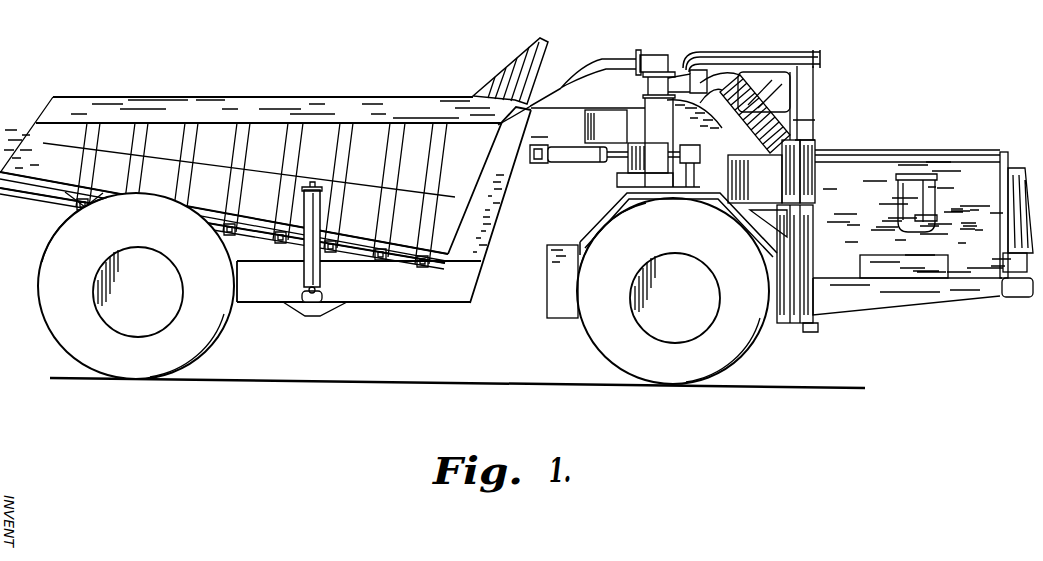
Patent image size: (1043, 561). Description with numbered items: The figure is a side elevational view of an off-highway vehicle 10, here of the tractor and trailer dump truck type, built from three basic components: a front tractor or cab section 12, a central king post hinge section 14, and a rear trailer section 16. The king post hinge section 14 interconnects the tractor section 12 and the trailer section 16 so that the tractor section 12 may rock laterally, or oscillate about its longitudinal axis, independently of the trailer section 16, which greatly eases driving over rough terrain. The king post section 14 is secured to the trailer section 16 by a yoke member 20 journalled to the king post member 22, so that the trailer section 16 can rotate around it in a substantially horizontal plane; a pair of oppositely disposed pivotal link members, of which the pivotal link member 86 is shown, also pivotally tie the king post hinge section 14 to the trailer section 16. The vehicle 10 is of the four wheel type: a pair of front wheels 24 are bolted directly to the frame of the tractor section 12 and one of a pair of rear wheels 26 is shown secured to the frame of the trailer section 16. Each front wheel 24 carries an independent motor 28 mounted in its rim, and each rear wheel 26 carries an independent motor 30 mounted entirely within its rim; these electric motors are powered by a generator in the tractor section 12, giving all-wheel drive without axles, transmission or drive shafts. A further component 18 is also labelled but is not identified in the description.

The off-highway vehicle 10 is at (415, 112).
The front tractor or cab section 12 is at (876, 165).
The king post hinge section 14 is at (665, 82).
The rear trailer section 16 is at (208, 107).
The top rail 18 is at (153, 102).
The yoke member 20 is at (638, 118).
The king post member 22 is at (660, 140).
The front wheels 24 is at (740, 352).
The rear wheels 26 is at (200, 347).
The motor 28 is at (696, 291).
The motor 30 is at (160, 286).
The pivotal link member 86 is at (643, 157).